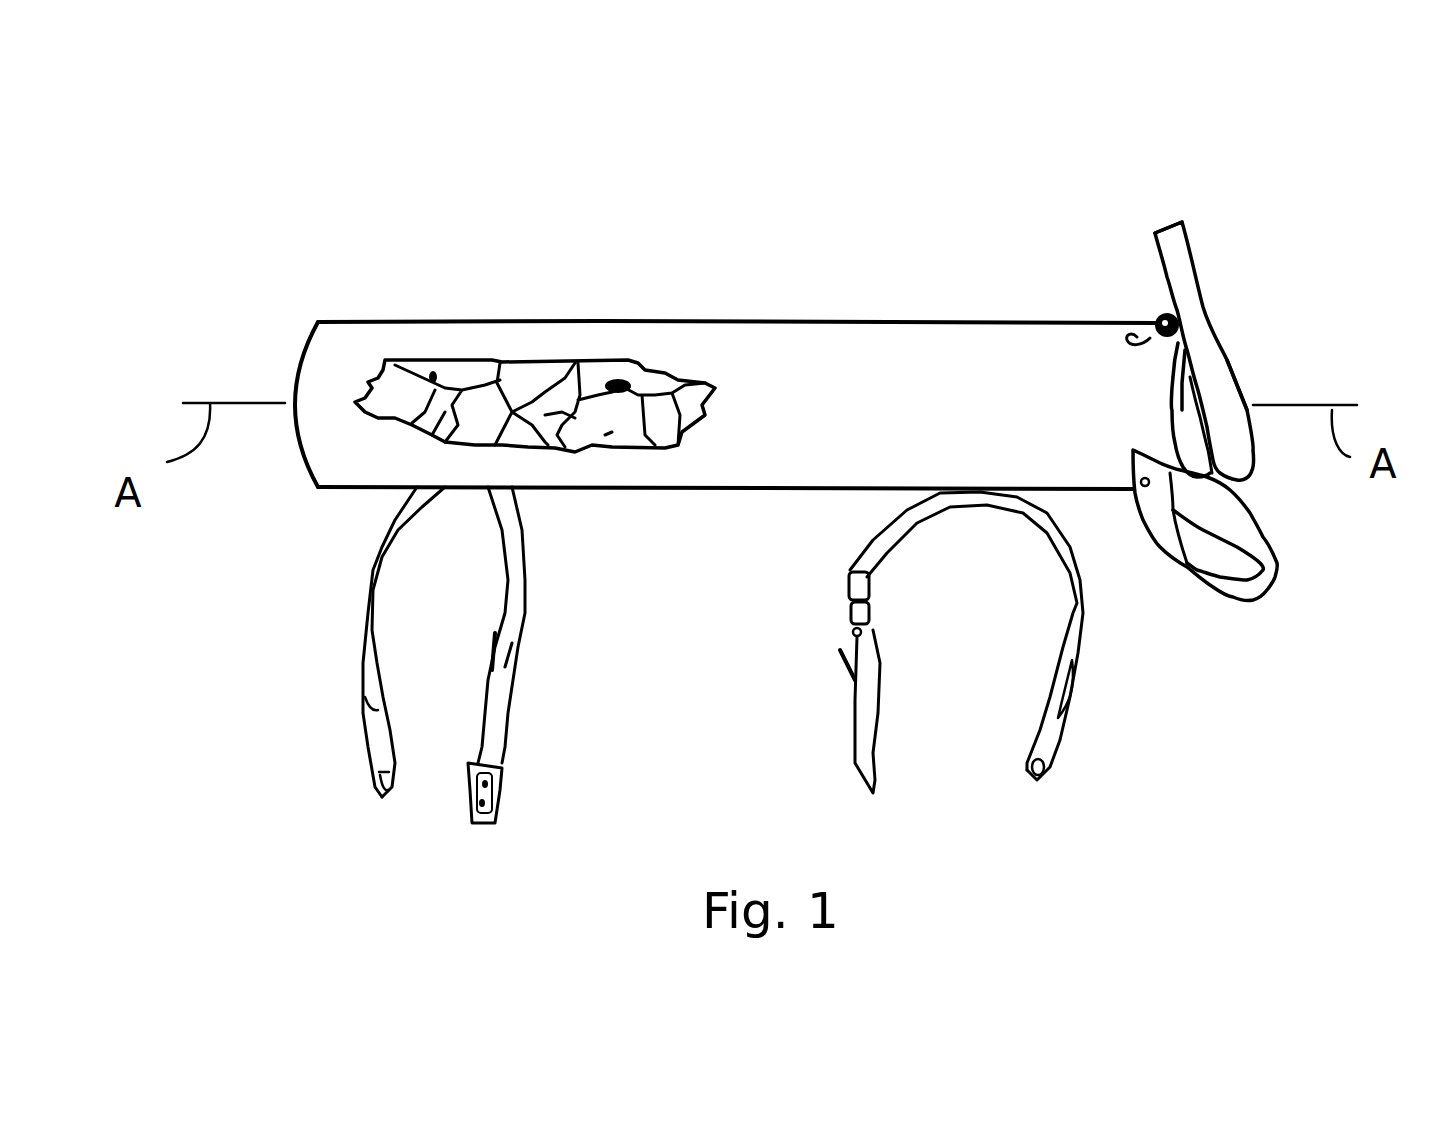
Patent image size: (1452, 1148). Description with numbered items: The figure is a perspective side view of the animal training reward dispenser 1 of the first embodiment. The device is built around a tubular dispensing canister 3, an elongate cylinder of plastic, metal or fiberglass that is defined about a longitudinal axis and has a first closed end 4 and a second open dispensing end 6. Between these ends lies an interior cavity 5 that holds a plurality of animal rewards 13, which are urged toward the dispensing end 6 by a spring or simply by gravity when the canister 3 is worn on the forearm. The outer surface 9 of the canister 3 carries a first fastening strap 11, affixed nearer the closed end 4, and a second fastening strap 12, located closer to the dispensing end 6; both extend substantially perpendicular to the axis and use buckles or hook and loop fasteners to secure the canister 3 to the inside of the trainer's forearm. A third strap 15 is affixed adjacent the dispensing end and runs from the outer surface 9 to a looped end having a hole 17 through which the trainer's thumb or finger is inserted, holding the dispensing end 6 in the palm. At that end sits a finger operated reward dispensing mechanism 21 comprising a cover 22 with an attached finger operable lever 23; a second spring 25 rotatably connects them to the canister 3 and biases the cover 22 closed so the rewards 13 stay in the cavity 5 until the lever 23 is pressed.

The animal training reward dispenser 1 is at (660, 227).
The tubular dispensing canister 3 is at (777, 337).
The first closed end 4 is at (303, 355).
The interior cavity 5 is at (445, 310).
The dispensing end 6 is at (1177, 397).
The outer surface 9 is at (787, 462).
The first fastening strap 11 is at (500, 710).
The second fastening strap 12 is at (863, 727).
The animal rewards 13 is at (522, 383).
The third strap 15 is at (1257, 583).
The hole 17 is at (1210, 555).
The finger operated reward dispensing mechanism 21 is at (1228, 218).
The cover 22 is at (1227, 392).
The finger operable lever 23 is at (1193, 233).
The second spring 25 is at (1160, 318).